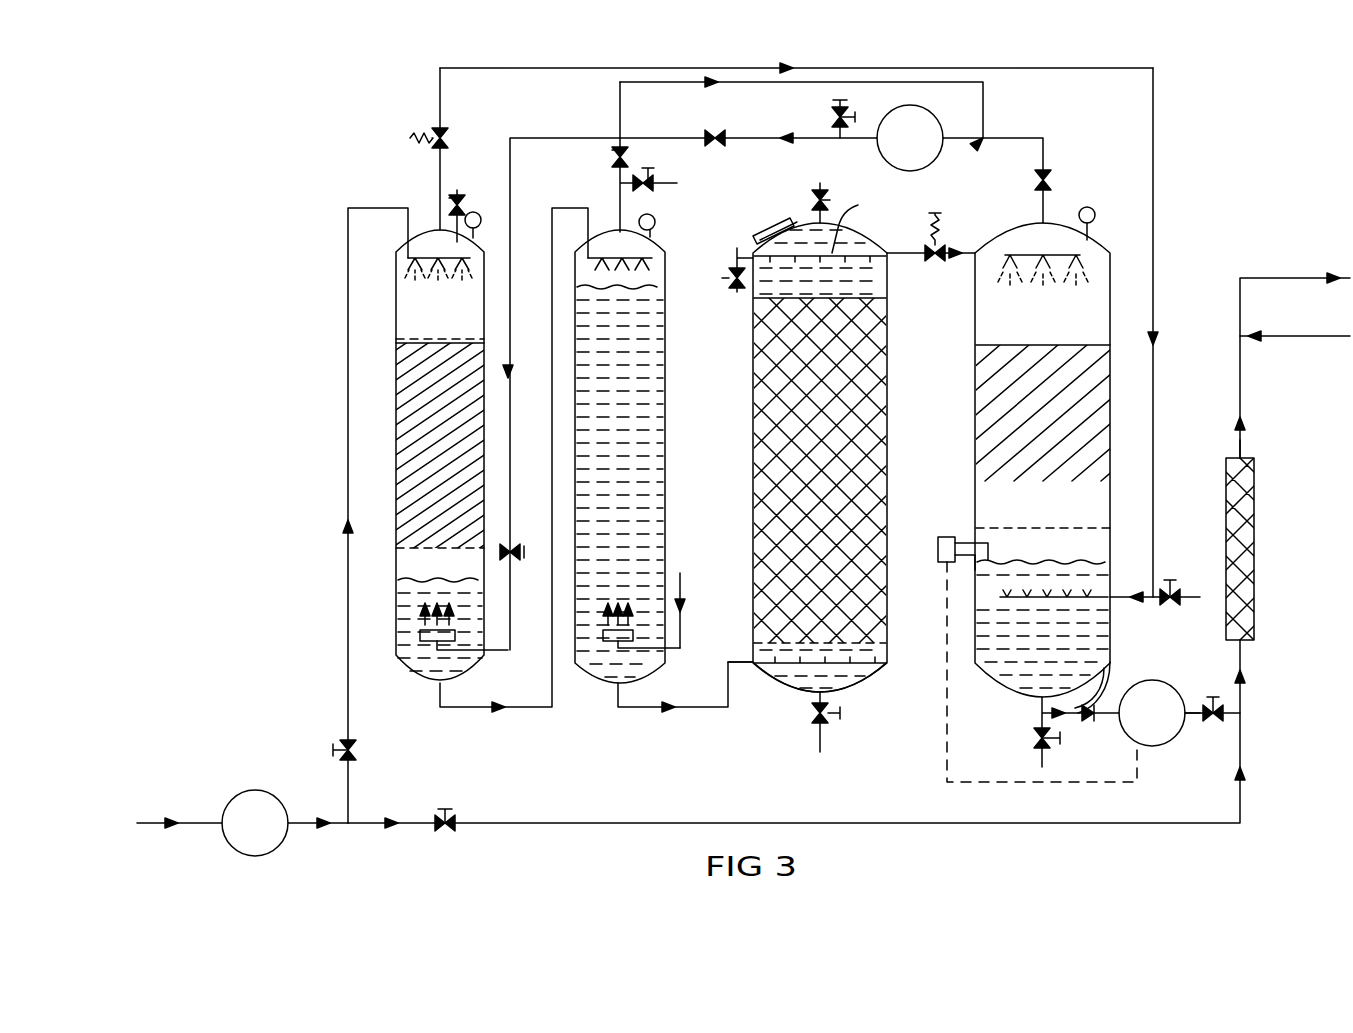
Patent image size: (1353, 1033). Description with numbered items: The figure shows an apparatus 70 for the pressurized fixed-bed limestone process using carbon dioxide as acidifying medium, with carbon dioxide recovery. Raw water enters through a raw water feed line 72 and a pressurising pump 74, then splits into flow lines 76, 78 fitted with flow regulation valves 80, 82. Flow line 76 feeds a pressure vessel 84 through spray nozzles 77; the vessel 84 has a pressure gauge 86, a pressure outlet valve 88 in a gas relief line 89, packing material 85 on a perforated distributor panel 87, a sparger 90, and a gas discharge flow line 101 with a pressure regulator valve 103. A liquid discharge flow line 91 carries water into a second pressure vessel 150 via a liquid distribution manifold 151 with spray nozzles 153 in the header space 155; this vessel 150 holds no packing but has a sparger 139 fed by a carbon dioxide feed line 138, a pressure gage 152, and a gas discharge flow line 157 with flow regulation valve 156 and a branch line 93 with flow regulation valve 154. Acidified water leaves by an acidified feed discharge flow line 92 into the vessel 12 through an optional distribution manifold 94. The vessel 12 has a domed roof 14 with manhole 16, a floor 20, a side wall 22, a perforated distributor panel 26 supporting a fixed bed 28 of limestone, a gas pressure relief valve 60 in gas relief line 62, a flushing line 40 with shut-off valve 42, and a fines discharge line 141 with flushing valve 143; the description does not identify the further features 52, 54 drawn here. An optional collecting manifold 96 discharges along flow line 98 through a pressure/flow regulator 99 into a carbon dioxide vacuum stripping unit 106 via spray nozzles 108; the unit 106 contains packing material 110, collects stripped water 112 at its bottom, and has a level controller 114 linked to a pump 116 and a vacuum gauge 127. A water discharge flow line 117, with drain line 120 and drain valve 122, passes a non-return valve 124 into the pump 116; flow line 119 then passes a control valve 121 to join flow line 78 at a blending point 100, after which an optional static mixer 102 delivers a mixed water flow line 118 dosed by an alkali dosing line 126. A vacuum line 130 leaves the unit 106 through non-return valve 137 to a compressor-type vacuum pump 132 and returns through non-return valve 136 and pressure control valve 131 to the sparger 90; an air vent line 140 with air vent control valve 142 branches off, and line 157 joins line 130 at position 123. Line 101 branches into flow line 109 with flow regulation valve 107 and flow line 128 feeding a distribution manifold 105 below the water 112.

The apparatus 70 is at (1202, 100).
The raw water feed line 72 is at (170, 820).
The pressurising pump 74 is at (256, 800).
The flow line 76 is at (337, 467).
The spray nozzles 77 is at (420, 258).
The flow line 78 is at (570, 823).
The flow regulation valve 80 is at (363, 749).
The flow regulation valve 82 is at (444, 833).
The pressure vessel 84 is at (387, 447).
The packing material 85 is at (415, 489).
The pressure gauge 86 is at (480, 218).
The perforated distributor panel 87 is at (407, 547).
The pressure outlet valve 88 is at (460, 192).
The gas relief line 89 is at (440, 215).
The sparger 90 is at (455, 632).
The liquid discharge flow line 91 is at (527, 707).
The acidified feed discharge flow line 92 is at (655, 707).
The branch line 93 is at (653, 173).
The distribution manifold 94 is at (870, 672).
The collecting manifold 96 is at (845, 217).
The flow line 98 is at (895, 257).
The pressure/flow regulator 99 is at (943, 250).
The blending point 100 is at (1242, 714).
The gas discharge flow line 101 is at (425, 166).
The static mixer 102 is at (1258, 530).
The pressure regulator valve 103 is at (442, 138).
The distribution manifold 105 is at (1103, 590).
The carbon dioxide vacuum stripping unit 106 is at (1128, 388).
The flow regulation valve 107 is at (1170, 603).
The spray nozzles 108 is at (1053, 252).
The flow line 109 is at (1180, 590).
The packing material 110 is at (1010, 465).
The water 112 is at (947, 606).
The level controller 114 is at (945, 536).
The pump 116 is at (1150, 737).
The water discharge flow line 117 is at (1098, 690).
The mixed water flow line 118 is at (1246, 423).
The flow line 119 is at (1210, 720).
The drain line 120 is at (1038, 717).
The control valve 121 is at (1205, 695).
The drain valve 122 is at (1042, 738).
The position 123 is at (1003, 145).
The non-return valve 124 is at (1090, 722).
The alkali dosing line 126 is at (1287, 338).
The vacuum gauge 127 is at (1105, 200).
The flow line 128 is at (1113, 603).
The vacuum line 130 is at (552, 138).
The pressure control valve 131 is at (510, 542).
The vacuum pump 132 is at (920, 112).
The non-return valve 136 is at (715, 135).
The non-return valve 137 is at (1046, 178).
The carbon dioxide feed line 138 is at (680, 593).
The sparger 139 is at (638, 630).
The air vent line 140 is at (857, 117).
The fines discharge line 141 is at (736, 248).
The air vent control valve 142 is at (837, 112).
The flushing valve 143 is at (728, 278).
The pressure vessel 150 is at (665, 467).
The liquid distribution manifold 151 is at (622, 270).
The pressure gage 152 is at (653, 224).
The spray nozzles 153 is at (640, 258).
The flow regulation valve 154 is at (643, 188).
The header space 155 is at (595, 277).
The flow regulation valve 156 is at (623, 157).
The gas discharge flow line 157 is at (685, 68).
The vessel 12 is at (895, 458).
The roof 14 is at (865, 235).
The manhole 16 is at (780, 220).
The floor 20 is at (870, 697).
The side wall 22 is at (760, 520).
The perforated distributor panel 26 is at (880, 650).
The fixed bed 28 is at (775, 454).
The flushing line 40 is at (820, 732).
The shut-off valve 42 is at (840, 718).
The inlet 52 is at (753, 662).
The liquid 54 is at (865, 295).
The gas pressure relief valve 60 is at (828, 200).
The gas relief line 62 is at (820, 189).